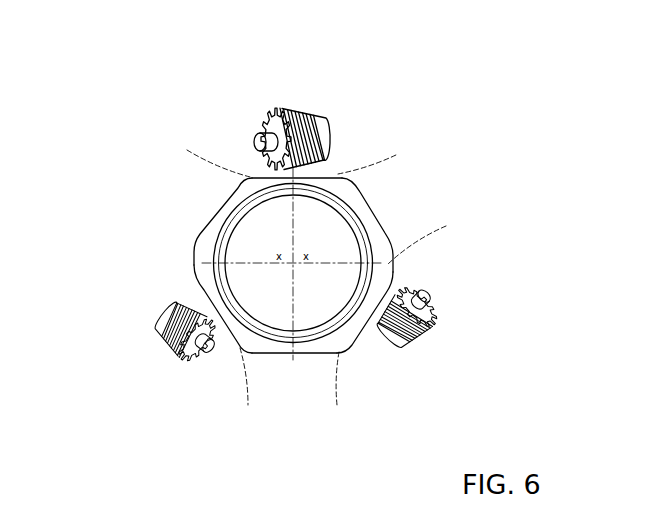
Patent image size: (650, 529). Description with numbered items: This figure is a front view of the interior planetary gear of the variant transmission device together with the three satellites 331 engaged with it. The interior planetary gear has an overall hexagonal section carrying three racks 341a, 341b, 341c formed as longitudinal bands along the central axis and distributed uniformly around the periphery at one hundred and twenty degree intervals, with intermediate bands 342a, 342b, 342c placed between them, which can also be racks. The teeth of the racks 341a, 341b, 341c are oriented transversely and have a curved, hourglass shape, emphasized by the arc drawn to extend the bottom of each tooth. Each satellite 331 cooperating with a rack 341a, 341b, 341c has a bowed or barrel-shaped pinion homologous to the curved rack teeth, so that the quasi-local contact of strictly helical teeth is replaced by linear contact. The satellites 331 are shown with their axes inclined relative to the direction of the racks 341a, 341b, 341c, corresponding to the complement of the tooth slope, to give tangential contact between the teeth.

The satellite 331 is at (308, 99).
The rack 341a is at (331, 175).
The rack 341b is at (348, 352).
The rack 341c is at (197, 278).
The band 342a is at (367, 215).
The band 342b is at (307, 352).
The band 342c is at (195, 281).